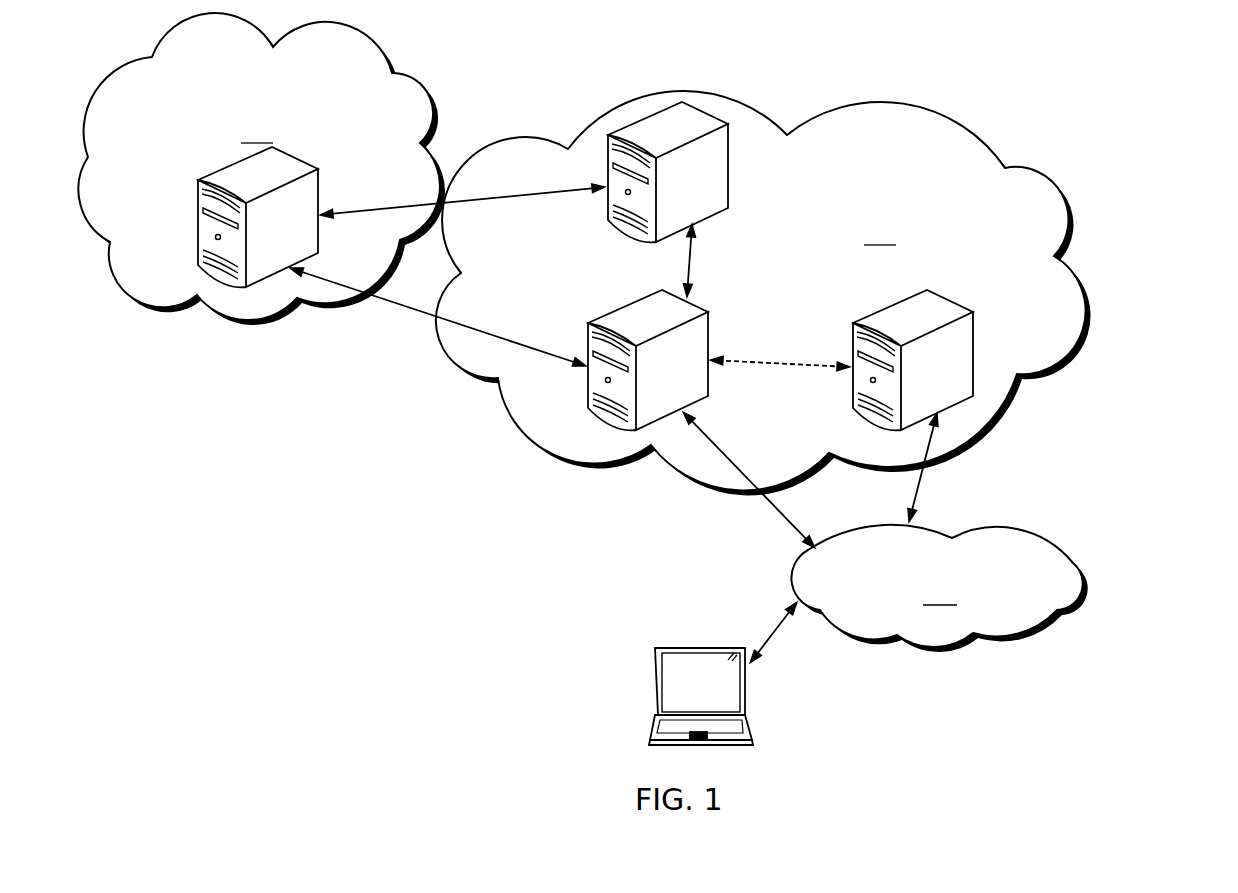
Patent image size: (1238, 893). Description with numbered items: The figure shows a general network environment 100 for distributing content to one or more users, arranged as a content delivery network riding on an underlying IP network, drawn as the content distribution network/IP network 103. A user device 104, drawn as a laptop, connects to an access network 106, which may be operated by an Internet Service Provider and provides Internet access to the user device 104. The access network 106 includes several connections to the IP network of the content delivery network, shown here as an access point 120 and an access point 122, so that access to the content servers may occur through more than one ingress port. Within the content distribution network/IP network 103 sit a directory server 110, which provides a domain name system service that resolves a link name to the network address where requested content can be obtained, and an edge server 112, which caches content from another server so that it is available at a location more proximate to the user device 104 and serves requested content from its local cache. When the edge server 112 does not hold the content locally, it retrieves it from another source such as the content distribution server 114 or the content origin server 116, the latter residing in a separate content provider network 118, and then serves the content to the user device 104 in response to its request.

The network environment 100 is at (1130, 149).
The content distribution network / IP network 103 is at (763, 293).
The user device 104 is at (655, 715).
The access network 106 is at (939, 588).
The directory server 110 is at (973, 338).
The edge server 112 is at (622, 308).
The content distribution server 114 is at (728, 190).
The content origin server 116 is at (198, 226).
The content provider network 118 is at (261, 169).
The access point 120 is at (780, 522).
The access point 122 is at (918, 492).